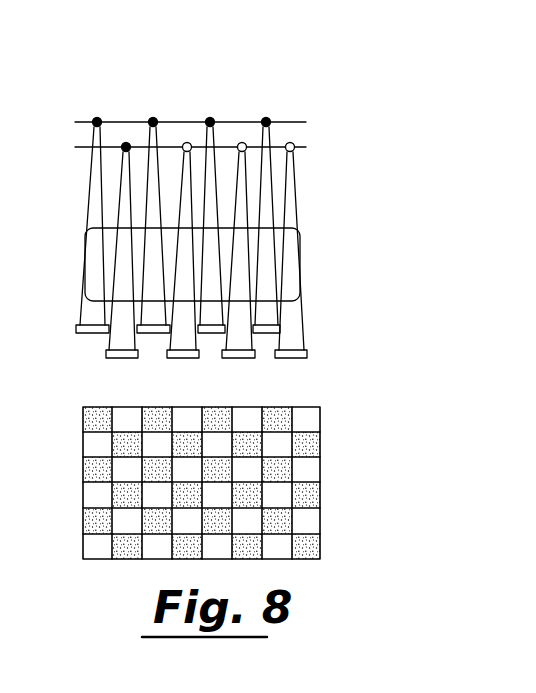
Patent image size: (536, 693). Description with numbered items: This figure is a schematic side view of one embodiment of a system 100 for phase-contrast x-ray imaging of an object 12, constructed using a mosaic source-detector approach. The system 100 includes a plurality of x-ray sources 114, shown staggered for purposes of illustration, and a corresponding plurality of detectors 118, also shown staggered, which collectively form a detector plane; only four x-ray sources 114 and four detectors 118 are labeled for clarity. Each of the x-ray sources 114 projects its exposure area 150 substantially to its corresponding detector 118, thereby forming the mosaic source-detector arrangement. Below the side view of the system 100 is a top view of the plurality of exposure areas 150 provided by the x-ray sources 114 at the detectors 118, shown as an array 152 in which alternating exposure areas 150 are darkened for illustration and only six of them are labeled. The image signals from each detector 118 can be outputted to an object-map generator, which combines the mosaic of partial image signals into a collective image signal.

The system for phase-contrast x-ray imaging 100 is at (292, 61).
The object 12 is at (290, 283).
The x-ray sources 114 is at (97, 118).
The detectors 118 is at (118, 358).
The exposure areas 150 is at (83, 547).
The checkerboard pattern 152 is at (211, 504).